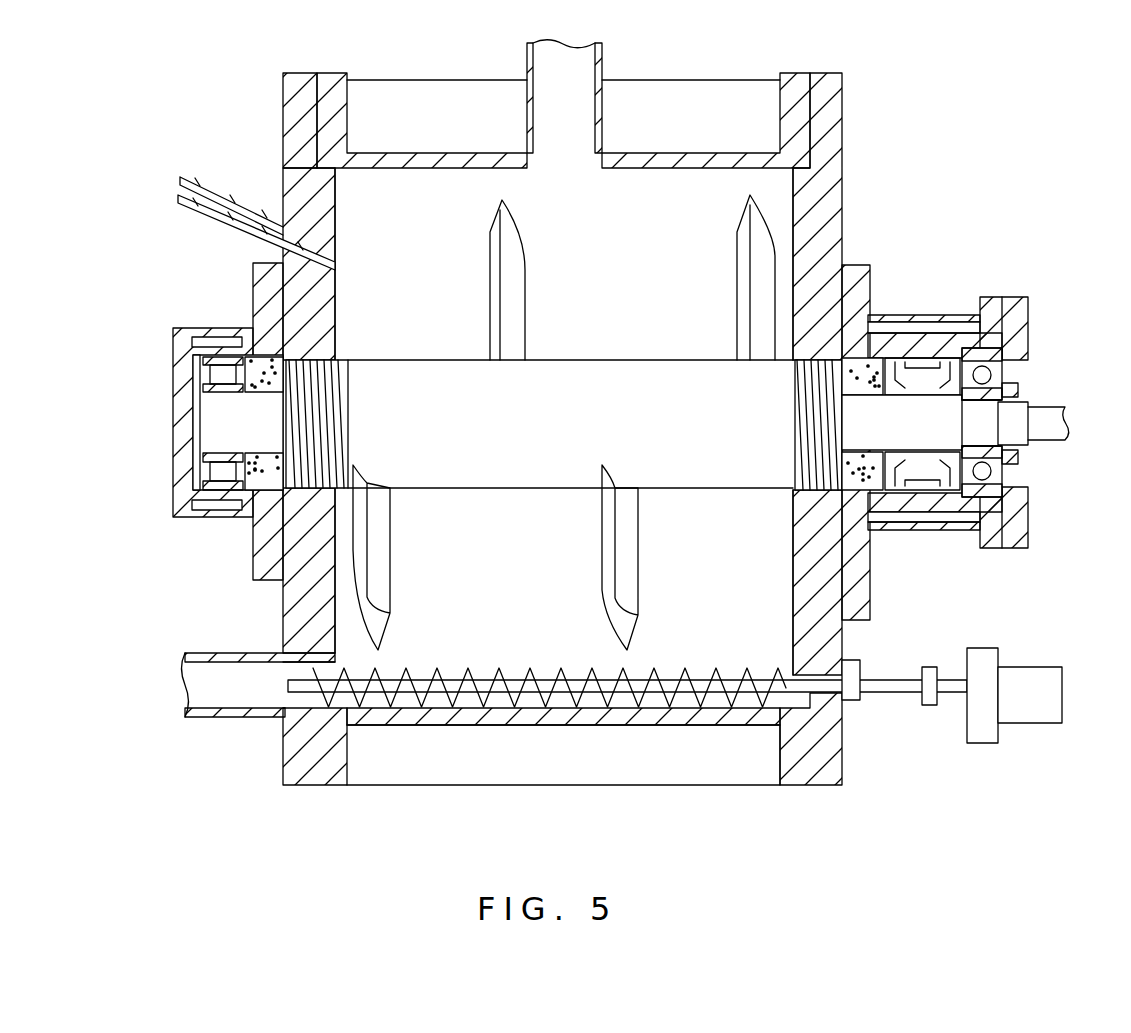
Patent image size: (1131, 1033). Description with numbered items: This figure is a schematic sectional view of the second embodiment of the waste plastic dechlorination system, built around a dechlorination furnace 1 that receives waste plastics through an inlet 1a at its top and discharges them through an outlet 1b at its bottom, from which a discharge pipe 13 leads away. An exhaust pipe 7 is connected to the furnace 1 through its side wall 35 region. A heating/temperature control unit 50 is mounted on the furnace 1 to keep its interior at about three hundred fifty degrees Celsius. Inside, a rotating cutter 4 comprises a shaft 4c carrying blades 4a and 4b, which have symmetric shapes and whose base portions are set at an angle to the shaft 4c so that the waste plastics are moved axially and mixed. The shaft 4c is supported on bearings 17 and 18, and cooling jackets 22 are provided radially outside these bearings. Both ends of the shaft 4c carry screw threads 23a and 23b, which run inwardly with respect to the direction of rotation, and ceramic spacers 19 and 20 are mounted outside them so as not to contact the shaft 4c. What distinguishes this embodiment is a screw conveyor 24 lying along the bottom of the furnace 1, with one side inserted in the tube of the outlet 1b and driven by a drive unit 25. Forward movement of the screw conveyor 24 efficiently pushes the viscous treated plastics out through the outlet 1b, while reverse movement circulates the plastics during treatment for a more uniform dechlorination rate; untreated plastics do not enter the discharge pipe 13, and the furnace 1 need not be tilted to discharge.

The dechlorination furnace 1 is at (797, 103).
The inlet 1a is at (553, 72).
The outlet 1b is at (255, 697).
The rotating cutter 4 is at (570, 469).
The blades 4a is at (495, 557).
The blades 4b is at (748, 205).
The shaft 4c is at (652, 375).
The exhaust pipe 7 is at (203, 187).
The discharge pipe 13 is at (197, 695).
The bearing 17 is at (993, 357).
The bearing 18 is at (220, 362).
The spacer 19 is at (257, 490).
The spacer 20 is at (877, 360).
The cooling jackets 22 is at (205, 503).
The screw thread 23a is at (822, 492).
The screw thread 23b is at (318, 490).
The screw conveyor 24 is at (600, 705).
The drive unit 25 is at (1033, 665).
The side wall 35 is at (828, 185).
The heating/temperature control unit 50 is at (418, 102).